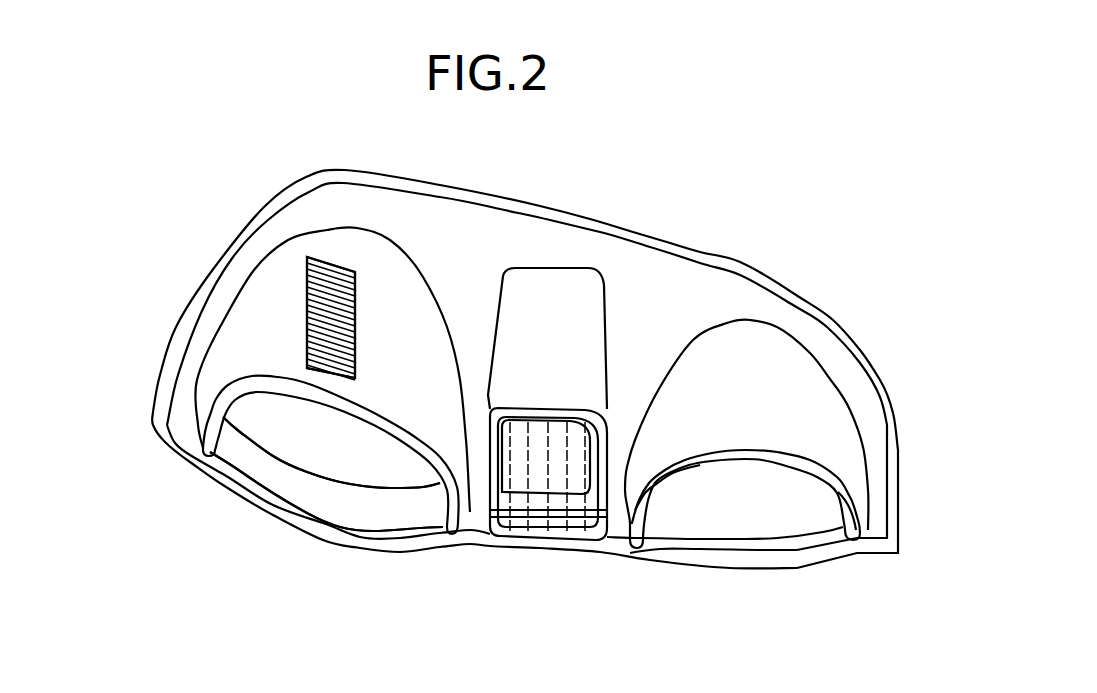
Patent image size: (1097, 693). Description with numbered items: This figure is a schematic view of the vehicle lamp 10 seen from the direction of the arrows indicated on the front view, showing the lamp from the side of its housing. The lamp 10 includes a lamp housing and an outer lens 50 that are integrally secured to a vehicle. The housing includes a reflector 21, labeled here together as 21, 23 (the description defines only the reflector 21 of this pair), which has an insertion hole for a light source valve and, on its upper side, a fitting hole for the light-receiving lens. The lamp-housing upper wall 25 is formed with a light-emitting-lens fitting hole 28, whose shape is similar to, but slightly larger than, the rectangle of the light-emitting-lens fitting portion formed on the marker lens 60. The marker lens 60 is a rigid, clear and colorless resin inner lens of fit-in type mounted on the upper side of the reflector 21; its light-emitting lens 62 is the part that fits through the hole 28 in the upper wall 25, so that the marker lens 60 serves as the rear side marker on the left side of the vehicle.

The vehicle lamp 10 is at (580, 570).
The reflector 21 is at (353, 467).
The pocket bottom 23 is at (353, 467).
The lamp-housing upper wall 25 is at (237, 347).
The light-emitting-lens fitting hole 28 is at (307, 285).
The outer lens 50 is at (478, 547).
The marker lens 60 is at (322, 308).
The light-emitting lens 62 is at (318, 308).